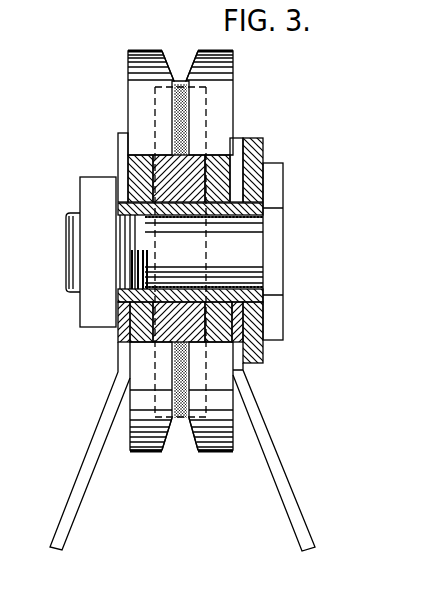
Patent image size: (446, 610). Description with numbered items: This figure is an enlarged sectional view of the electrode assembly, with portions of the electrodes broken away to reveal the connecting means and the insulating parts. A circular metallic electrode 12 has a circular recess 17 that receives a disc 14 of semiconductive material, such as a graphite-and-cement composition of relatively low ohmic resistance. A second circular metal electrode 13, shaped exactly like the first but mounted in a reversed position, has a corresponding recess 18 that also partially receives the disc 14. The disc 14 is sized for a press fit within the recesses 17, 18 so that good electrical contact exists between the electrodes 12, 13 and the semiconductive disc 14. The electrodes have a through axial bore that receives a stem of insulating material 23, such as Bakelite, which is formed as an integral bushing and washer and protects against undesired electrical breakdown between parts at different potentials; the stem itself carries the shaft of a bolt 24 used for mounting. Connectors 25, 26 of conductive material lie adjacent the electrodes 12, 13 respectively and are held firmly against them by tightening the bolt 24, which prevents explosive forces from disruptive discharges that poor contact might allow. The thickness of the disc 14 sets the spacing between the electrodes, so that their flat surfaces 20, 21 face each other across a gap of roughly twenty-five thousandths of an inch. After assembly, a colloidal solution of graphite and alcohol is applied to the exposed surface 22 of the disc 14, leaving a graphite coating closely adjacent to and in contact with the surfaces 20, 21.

The circular metallic electrode 12 is at (137, 73).
The circular metal electrode 13 is at (223, 70).
The disc of semiconductive material 14 is at (181, 228).
The circular recess 17 is at (155, 103).
The recess 18 is at (206, 103).
The flat surface 20 is at (176, 80).
The flat surface 21 is at (185, 80).
The exposed surface of the disc 22 is at (178, 423).
The stem of insulating material 23 is at (260, 153).
The bolt 24 is at (275, 270).
The connector 25 is at (67, 500).
The connector 26 is at (288, 478).